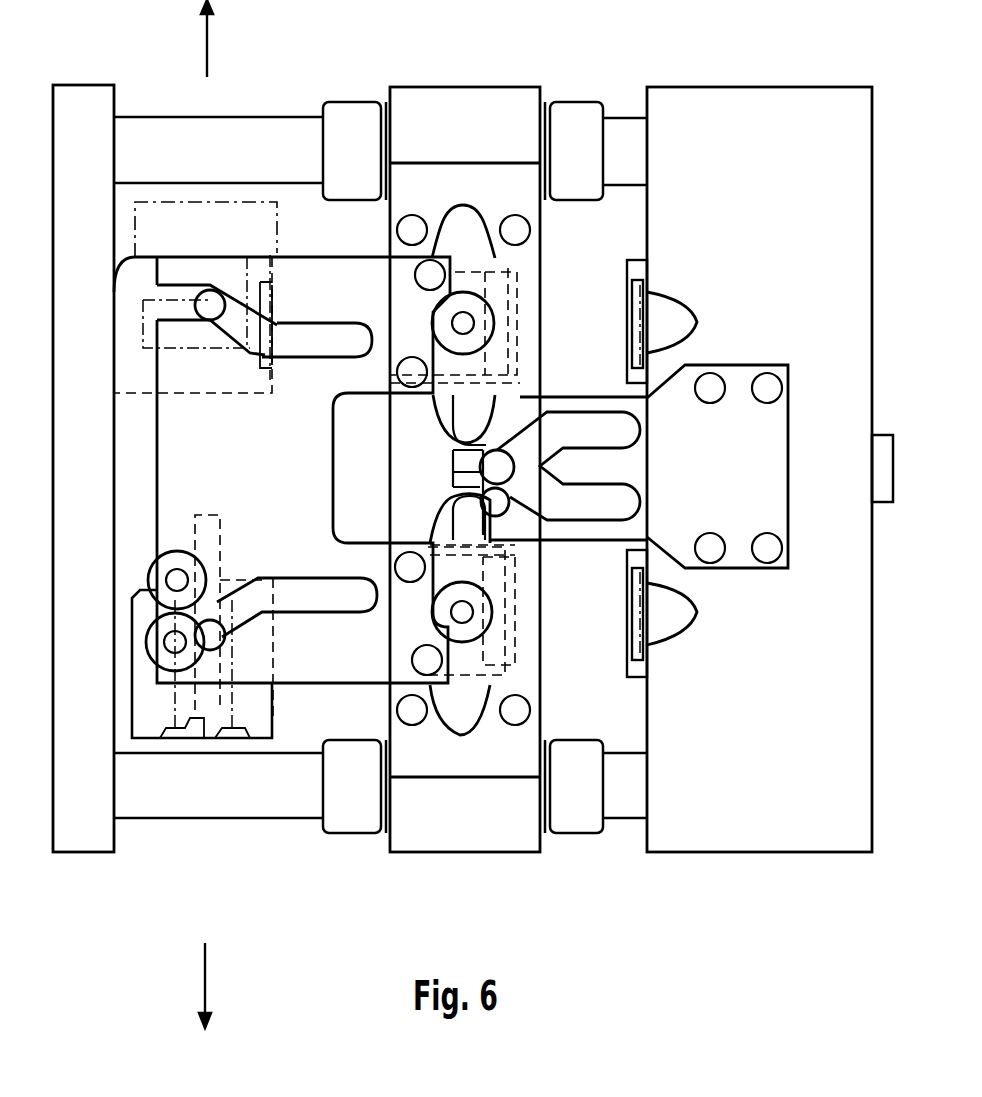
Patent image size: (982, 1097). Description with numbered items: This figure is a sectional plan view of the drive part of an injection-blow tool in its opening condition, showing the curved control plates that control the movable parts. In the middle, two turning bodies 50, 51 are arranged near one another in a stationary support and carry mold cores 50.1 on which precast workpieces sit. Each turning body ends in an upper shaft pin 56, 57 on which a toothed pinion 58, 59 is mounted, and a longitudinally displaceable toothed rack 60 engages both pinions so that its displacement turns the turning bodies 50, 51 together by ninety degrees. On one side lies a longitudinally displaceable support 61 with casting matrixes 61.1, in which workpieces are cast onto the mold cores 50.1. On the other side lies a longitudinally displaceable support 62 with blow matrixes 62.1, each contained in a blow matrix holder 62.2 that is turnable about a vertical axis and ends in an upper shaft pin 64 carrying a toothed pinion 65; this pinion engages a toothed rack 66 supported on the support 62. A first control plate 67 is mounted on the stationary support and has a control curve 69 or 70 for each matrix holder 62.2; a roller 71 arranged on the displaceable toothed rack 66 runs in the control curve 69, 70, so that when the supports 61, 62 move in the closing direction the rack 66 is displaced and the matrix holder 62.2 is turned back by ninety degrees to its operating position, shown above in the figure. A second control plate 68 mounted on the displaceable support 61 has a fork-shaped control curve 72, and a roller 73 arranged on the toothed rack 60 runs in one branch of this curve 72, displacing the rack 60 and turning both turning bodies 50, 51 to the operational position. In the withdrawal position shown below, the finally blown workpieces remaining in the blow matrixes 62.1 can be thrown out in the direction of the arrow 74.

The turning body 50 is at (515, 652).
The mold core 50.1 is at (473, 713).
The turning body 51 is at (500, 305).
The upper shaft pin 56 is at (470, 325).
The upper shaft pin 57 is at (470, 613).
The toothed pinion 58 is at (440, 625).
The toothed pinion 59 is at (430, 318).
The toothed rack 60 is at (520, 383).
The longitudinally displaceable support 61 is at (792, 228).
The casting matrix 61.1 is at (670, 302).
The longitudinally displaceable support 62 is at (94, 294).
The blow matrix 62.1 is at (250, 290).
The blow matrix holder 62.2 is at (265, 212).
The upper shaft pin 64 is at (172, 637).
The toothed pinion 65 is at (168, 650).
The toothed rack 66 is at (218, 560).
The first control plate 67 is at (249, 447).
The second control plate 68 is at (713, 456).
The control curve 69 is at (305, 580).
The control curve 70 is at (298, 352).
The roller 71 is at (215, 636).
The fork-shaped control curve 72 is at (620, 500).
The roller 73 is at (487, 475).
The arrow 74 is at (207, 33).